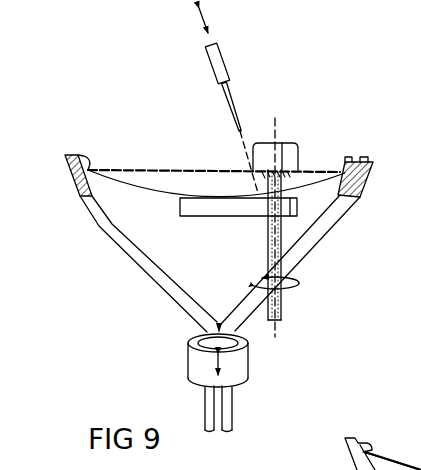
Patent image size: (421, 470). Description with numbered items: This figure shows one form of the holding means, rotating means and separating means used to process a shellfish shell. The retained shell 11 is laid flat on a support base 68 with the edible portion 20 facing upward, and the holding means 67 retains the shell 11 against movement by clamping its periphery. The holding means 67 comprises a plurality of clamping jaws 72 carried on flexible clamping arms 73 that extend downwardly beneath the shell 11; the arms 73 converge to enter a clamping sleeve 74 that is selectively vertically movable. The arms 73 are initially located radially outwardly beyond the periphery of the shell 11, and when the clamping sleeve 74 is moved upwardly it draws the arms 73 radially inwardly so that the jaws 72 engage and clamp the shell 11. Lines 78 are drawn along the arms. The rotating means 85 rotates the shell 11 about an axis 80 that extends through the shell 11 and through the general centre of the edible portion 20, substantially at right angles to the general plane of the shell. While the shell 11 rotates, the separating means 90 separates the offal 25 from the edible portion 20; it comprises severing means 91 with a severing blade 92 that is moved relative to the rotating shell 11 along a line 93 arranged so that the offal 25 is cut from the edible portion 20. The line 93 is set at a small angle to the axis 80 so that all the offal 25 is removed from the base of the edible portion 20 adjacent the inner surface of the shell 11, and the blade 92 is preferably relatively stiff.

The retained shell 11 is at (137, 181).
The edible portion 20 is at (286, 152).
The offal 25 is at (320, 166).
The holding means 67 is at (112, 253).
The support base 68 is at (206, 207).
The clamping jaws 72 is at (71, 156).
The flexible clamping arms 73 is at (148, 269).
The clamping sleeve 74 is at (233, 371).
The funnel wall lines 78 is at (308, 241).
The axis 80 is at (268, 131).
The rotating means 85 is at (292, 320).
The separating means 90 is at (232, 50).
The severing means 91 is at (220, 100).
The severing blade 92 is at (237, 119).
The line 93 is at (248, 155).